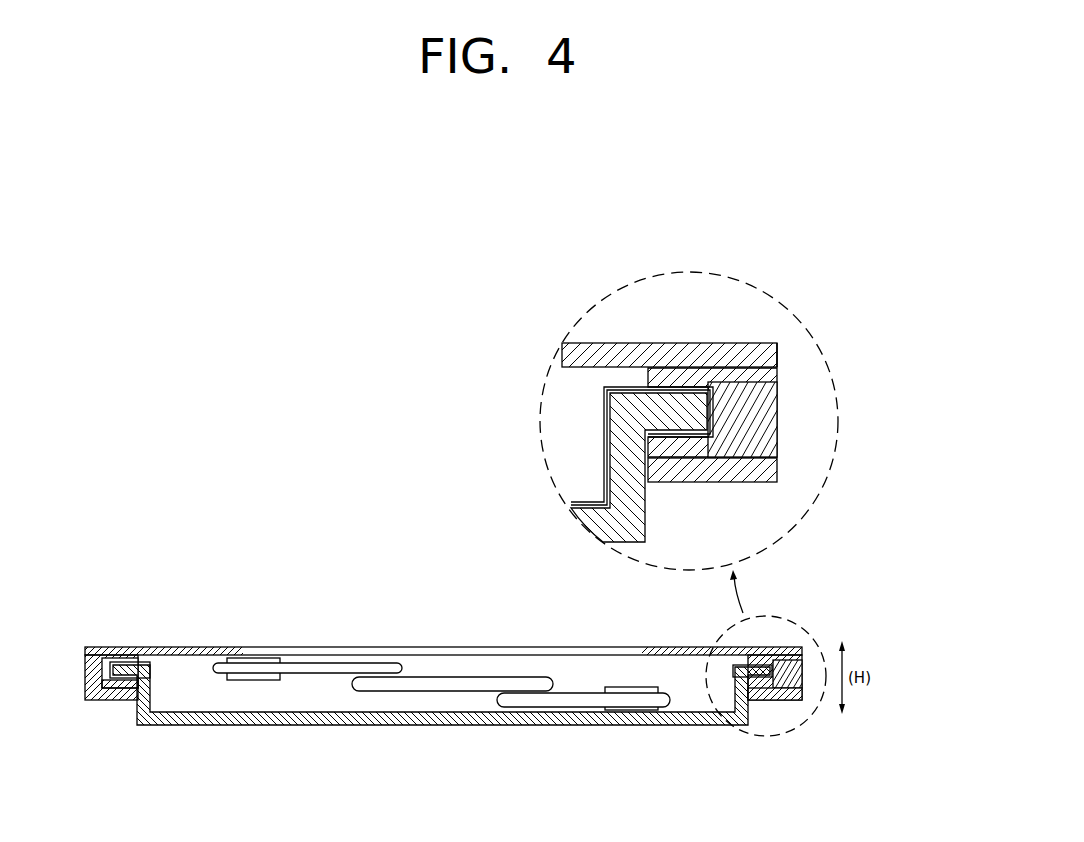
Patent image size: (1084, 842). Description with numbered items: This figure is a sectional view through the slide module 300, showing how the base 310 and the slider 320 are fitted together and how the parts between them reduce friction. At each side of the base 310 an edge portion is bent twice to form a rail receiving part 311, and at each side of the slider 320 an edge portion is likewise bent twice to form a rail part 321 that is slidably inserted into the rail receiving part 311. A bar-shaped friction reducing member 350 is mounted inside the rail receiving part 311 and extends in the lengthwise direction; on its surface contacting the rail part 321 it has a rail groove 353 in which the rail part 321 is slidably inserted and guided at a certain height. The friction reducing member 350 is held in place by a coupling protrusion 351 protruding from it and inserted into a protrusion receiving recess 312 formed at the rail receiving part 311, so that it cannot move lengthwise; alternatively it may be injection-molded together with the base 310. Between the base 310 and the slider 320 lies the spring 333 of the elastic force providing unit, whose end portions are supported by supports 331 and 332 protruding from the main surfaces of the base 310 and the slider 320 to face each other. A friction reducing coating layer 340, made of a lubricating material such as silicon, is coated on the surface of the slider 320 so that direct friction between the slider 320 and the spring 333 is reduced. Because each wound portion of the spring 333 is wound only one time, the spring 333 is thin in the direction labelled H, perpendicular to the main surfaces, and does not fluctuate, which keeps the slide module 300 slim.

The slide module 300 is at (443, 549).
The base 310 is at (443, 438).
The rail receiving part 311 is at (103, 629).
The protrusion receiving recess 312 is at (822, 333).
The slider 320 is at (441, 603).
The rail part 321 is at (437, 590).
The support 331 is at (253, 731).
The support 332 is at (631, 744).
The spring 333 is at (441, 733).
The friction reducing coating layer 340 is at (441, 532).
The friction reducing member 350 is at (489, 629).
The coupling protrusion 351 is at (799, 591).
The rail groove 353 is at (770, 534).